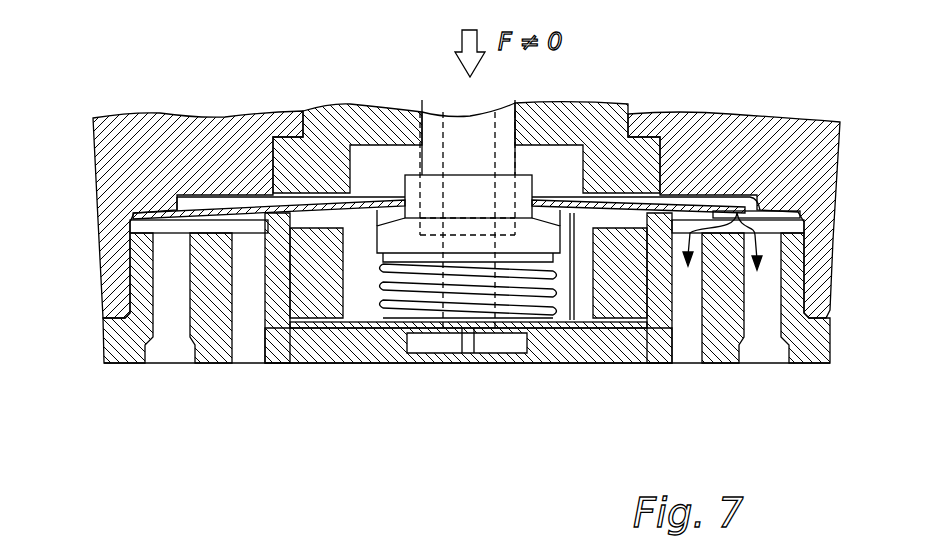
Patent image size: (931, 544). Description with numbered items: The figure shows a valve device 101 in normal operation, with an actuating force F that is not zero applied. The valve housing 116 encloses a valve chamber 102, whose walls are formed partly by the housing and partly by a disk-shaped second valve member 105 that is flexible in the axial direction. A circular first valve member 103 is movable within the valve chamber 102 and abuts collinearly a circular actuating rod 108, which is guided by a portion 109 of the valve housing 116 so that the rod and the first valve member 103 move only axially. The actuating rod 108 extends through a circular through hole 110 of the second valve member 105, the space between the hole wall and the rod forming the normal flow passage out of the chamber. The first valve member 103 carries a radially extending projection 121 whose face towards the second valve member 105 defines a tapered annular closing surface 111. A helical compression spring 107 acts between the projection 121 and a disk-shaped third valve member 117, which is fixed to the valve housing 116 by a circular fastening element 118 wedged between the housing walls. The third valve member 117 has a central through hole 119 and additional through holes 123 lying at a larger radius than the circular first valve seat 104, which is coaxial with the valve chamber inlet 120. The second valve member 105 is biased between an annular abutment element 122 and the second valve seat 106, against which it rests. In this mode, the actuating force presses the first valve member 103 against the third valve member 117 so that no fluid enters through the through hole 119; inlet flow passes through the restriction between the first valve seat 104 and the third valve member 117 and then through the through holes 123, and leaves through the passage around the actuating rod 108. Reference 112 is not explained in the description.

The valve device 101 is at (822, 410).
The valve chamber 102 is at (403, 330).
The first valve member 103 is at (540, 328).
The first valve seat 104 is at (551, 330).
The second valve member 105 is at (187, 218).
The second valve seat 106 is at (272, 218).
The helical compression spring 107 is at (577, 287).
The actuating rod 108 is at (503, 140).
The portion of the valve housing 109 is at (403, 105).
The through hole 110 is at (402, 236).
The annular closing surface 111 is at (290, 205).
The piston neck 112 is at (378, 208).
The valve housing 116 is at (753, 143).
The third valve member 117 is at (648, 330).
The fastening element 118 is at (335, 290).
The through hole 119 is at (467, 328).
The valve chamber inlet 120 is at (438, 364).
The radially extending projection 121 is at (350, 205).
The annular abutment element 122 is at (165, 210).
The additional through holes 123 is at (530, 300).